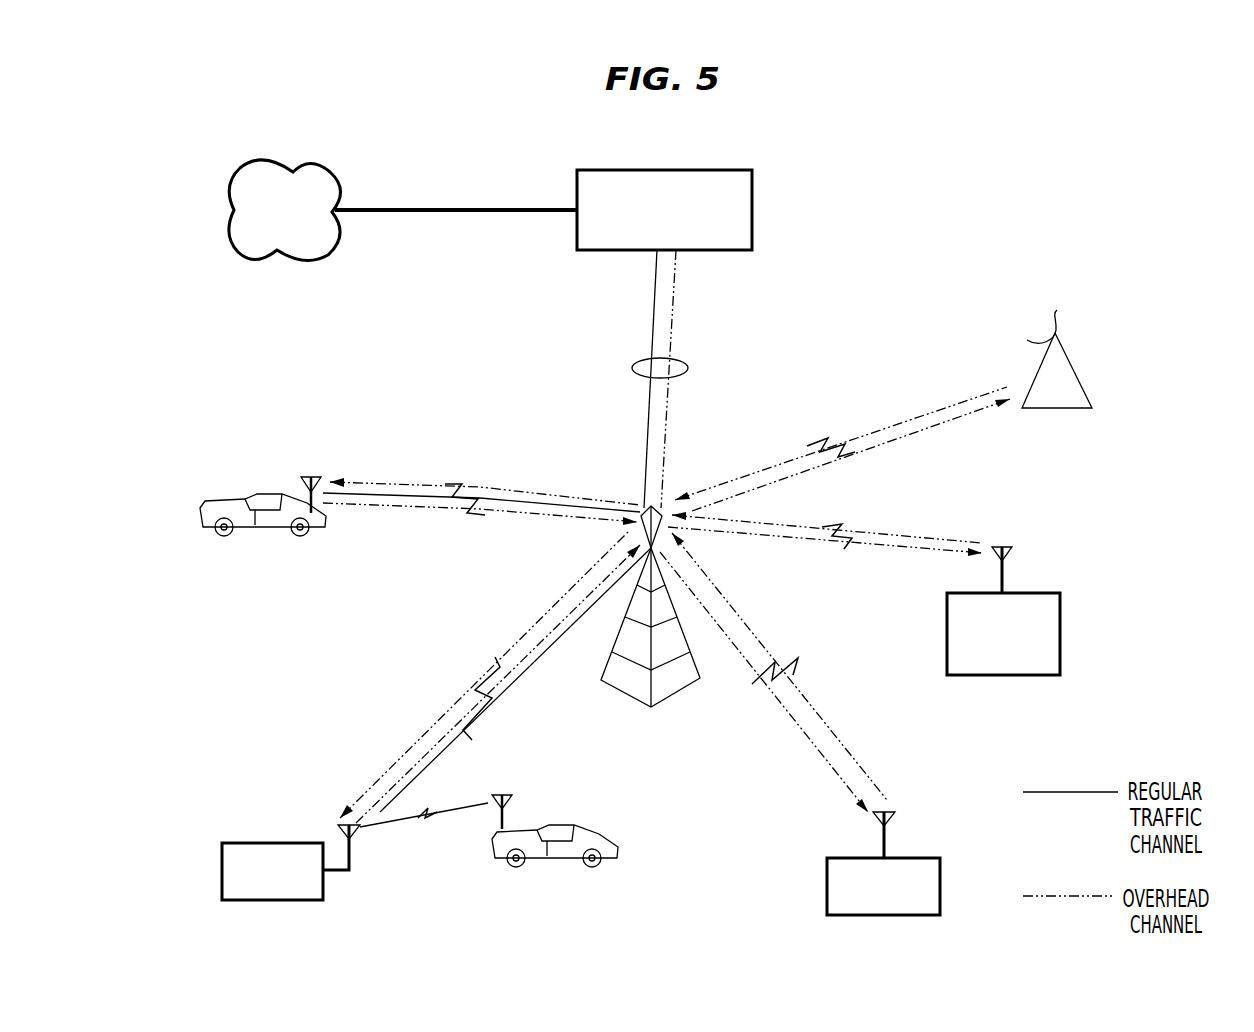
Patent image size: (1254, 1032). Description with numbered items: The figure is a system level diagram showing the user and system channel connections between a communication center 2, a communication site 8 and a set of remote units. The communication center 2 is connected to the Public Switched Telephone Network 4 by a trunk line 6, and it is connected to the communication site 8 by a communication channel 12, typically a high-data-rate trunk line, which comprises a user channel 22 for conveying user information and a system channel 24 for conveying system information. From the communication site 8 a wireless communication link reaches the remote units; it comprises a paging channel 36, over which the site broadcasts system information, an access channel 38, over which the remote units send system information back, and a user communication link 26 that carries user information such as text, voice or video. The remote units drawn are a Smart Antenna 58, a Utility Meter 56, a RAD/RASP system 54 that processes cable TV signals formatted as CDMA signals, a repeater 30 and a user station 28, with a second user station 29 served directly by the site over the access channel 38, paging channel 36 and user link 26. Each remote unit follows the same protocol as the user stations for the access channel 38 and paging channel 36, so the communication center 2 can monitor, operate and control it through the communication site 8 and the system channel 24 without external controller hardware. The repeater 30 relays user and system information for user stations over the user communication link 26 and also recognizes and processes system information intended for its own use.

The communication center 2 is at (621, 251).
The Public Switched Telephone Network 4 is at (246, 258).
The trunk line 6 is at (392, 210).
The communication site 8 is at (619, 680).
The communication channel 12 is at (689, 368).
The user channel 22 is at (644, 448).
The system channel 24 is at (667, 437).
The user communication link 26 is at (400, 497).
The user station 28 is at (556, 829).
The user station 29 is at (257, 503).
The repeater 30 is at (233, 843).
The paging channel 36 is at (521, 492).
The access channel 38 is at (432, 512).
The Remote Antenna Driver/Remote Antenna Signal Processor (RAD/RASP) system 54 is at (827, 876).
The Utility Meter 56 is at (1043, 593).
The Smart Antenna 58 is at (1074, 372).